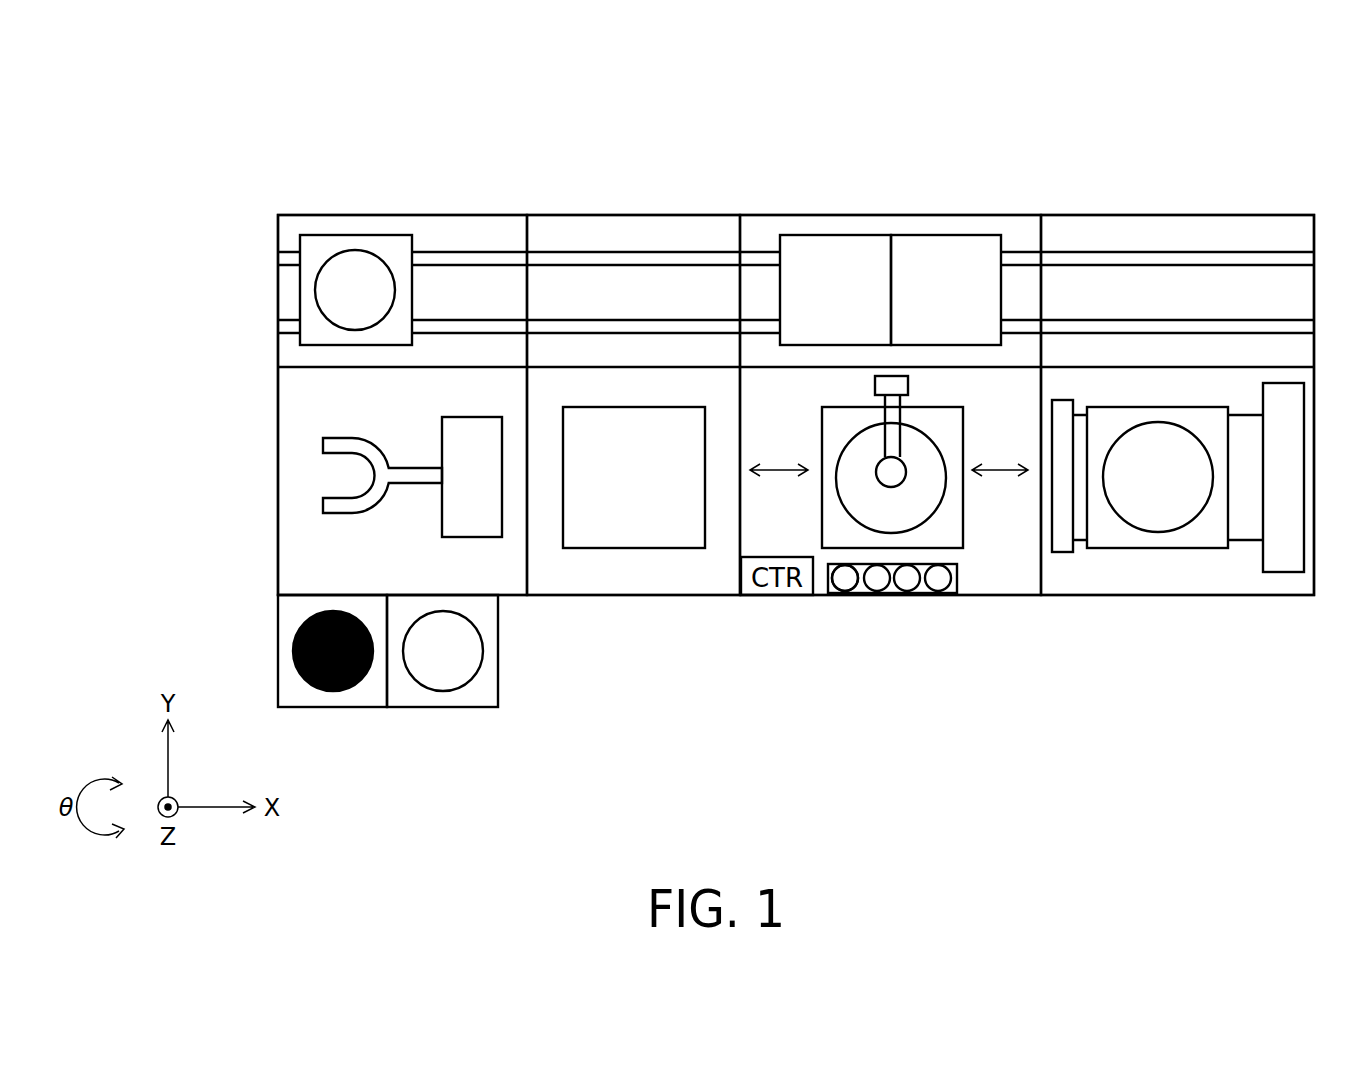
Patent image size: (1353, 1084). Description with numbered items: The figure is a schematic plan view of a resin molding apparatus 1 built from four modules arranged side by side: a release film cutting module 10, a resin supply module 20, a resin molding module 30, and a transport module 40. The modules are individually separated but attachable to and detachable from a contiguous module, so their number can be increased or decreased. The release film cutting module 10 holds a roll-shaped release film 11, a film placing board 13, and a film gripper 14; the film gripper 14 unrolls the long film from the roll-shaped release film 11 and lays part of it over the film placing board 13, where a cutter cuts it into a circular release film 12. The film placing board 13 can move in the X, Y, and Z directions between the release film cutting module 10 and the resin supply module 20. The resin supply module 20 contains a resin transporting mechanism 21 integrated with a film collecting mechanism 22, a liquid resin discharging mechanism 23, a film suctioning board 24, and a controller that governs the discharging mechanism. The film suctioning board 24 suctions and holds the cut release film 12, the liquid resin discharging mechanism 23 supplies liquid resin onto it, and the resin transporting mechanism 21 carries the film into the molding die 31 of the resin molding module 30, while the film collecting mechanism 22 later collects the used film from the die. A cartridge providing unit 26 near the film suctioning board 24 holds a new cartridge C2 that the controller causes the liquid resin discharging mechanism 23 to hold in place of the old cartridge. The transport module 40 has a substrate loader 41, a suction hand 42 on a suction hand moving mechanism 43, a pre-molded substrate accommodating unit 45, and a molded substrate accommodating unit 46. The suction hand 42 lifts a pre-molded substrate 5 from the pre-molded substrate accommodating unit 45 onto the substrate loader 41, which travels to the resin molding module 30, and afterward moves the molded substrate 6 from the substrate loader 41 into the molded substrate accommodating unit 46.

The resin molding apparatus 1 is at (281, 175).
The pre-molded substrate 5 is at (355, 251).
The molded substrate 6 is at (292, 651).
The release film cutting module 10 is at (1047, 121).
The roll-shaped release film 11 is at (1285, 572).
The release film 12 is at (947, 491).
The film placing board 13 is at (1158, 548).
The film gripper 14 is at (1066, 552).
The resin supply module 20 is at (747, 121).
The resin transporting mechanism 21 is at (835, 235).
The film collecting mechanism 22 is at (945, 235).
The liquid resin discharging mechanism 23 is at (893, 487).
The film suctioning board 24 is at (963, 532).
The cartridge providing unit 26 is at (923, 595).
The resin molding module 30 is at (530, 121).
The molding die 31 is at (652, 548).
The transport module 40 is at (520, 121).
The substrate loader 41 is at (300, 290).
The suction hand 42 is at (323, 448).
The suction hand moving mechanism 43 is at (492, 520).
The pre-molded substrate accommodating unit 45 is at (498, 697).
The molded substrate accommodating unit 46 is at (278, 612).
The new cartridge C2 is at (843, 590).